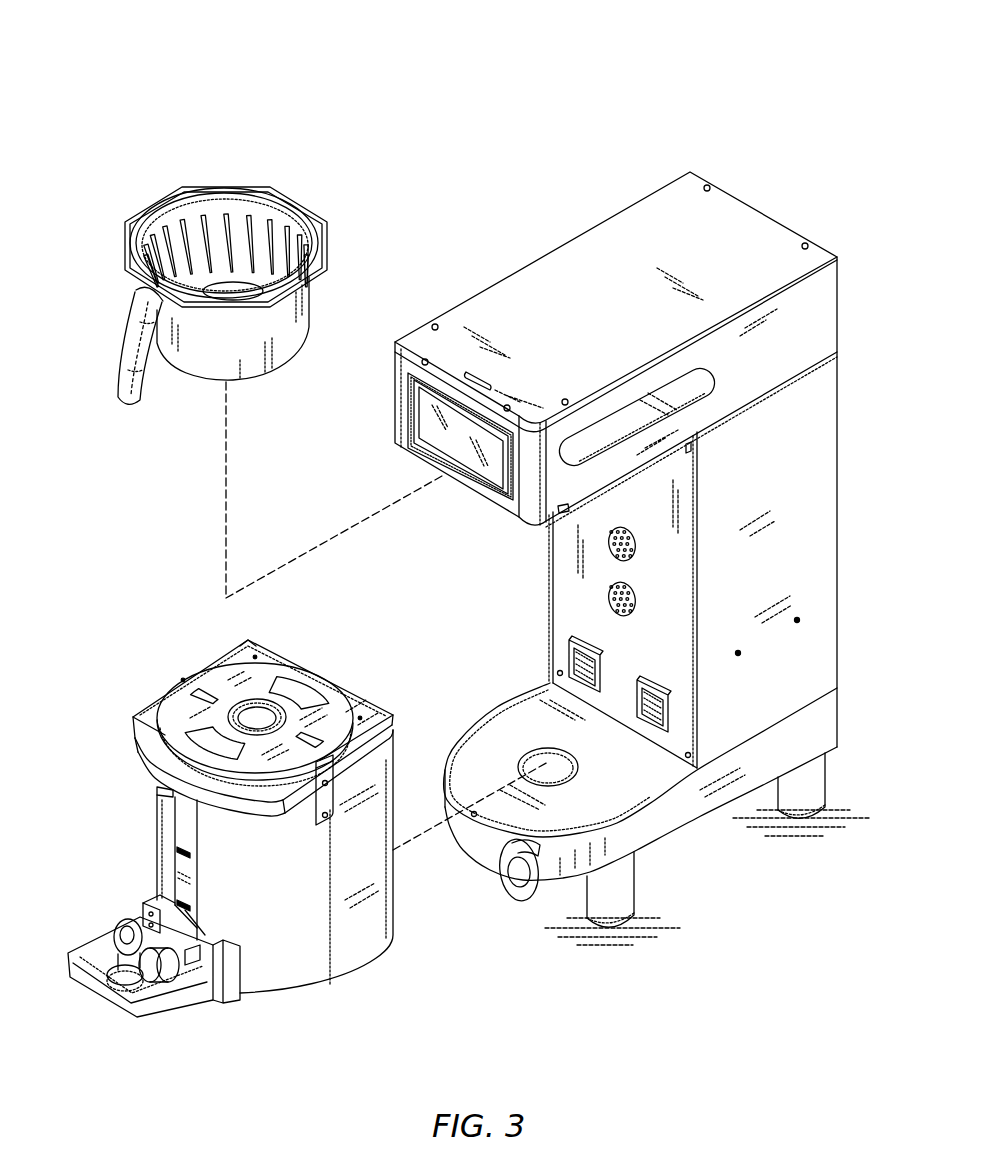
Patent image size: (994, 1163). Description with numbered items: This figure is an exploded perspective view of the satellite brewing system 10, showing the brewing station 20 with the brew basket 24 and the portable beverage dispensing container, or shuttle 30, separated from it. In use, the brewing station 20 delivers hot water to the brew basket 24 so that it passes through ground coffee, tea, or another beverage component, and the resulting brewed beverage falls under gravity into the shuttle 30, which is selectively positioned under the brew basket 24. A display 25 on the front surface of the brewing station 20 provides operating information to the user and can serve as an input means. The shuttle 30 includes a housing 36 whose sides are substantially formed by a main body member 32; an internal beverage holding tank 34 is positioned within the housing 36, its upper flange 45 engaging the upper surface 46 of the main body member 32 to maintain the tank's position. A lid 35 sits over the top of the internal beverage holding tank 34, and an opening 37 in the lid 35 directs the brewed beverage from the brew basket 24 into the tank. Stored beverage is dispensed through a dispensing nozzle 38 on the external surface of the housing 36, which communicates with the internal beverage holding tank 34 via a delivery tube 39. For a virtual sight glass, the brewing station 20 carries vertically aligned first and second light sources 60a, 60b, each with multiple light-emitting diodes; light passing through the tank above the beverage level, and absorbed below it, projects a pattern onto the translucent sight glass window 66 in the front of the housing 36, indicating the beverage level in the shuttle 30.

The satellite brewing system 10 is at (250, 62).
The brewing station 20 is at (838, 458).
The brew basket 24 is at (128, 343).
The display 25 is at (425, 420).
The portable beverage dispensing container 30 is at (157, 842).
The main body member 32 is at (162, 861).
The internal beverage holding tank 34 is at (260, 640).
The lid 35 is at (180, 703).
The housing 36 is at (273, 948).
The opening 37 is at (257, 730).
The dispensing nozzle 38 is at (118, 993).
The delivery tube 39 is at (170, 975).
The upper flange 45 is at (370, 712).
The upper surface 46 is at (390, 743).
The first light source 60a is at (608, 543).
The second light source 60b is at (609, 599).
The sight glass window 66 is at (187, 878).